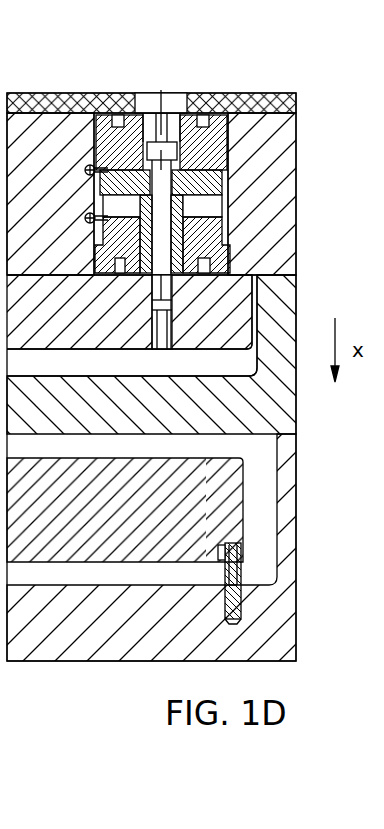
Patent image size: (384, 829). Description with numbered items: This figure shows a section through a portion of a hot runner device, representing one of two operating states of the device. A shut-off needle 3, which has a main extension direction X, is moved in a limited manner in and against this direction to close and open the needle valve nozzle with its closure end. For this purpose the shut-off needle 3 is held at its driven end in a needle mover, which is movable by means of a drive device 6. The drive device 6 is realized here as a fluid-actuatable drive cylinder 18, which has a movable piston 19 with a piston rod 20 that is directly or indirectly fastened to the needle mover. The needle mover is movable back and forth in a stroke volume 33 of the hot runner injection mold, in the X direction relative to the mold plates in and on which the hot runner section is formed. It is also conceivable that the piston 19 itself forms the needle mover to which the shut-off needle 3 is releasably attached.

The shut-off needle 3 is at (3, 135).
The drive device 6 is at (227, 155).
The piston 19 is at (215, 180).
The fluid-actuatable drive cylinder 18 is at (227, 225).
The piston rod 20 is at (184, 267).
The stroke volume 33 is at (213, 363).